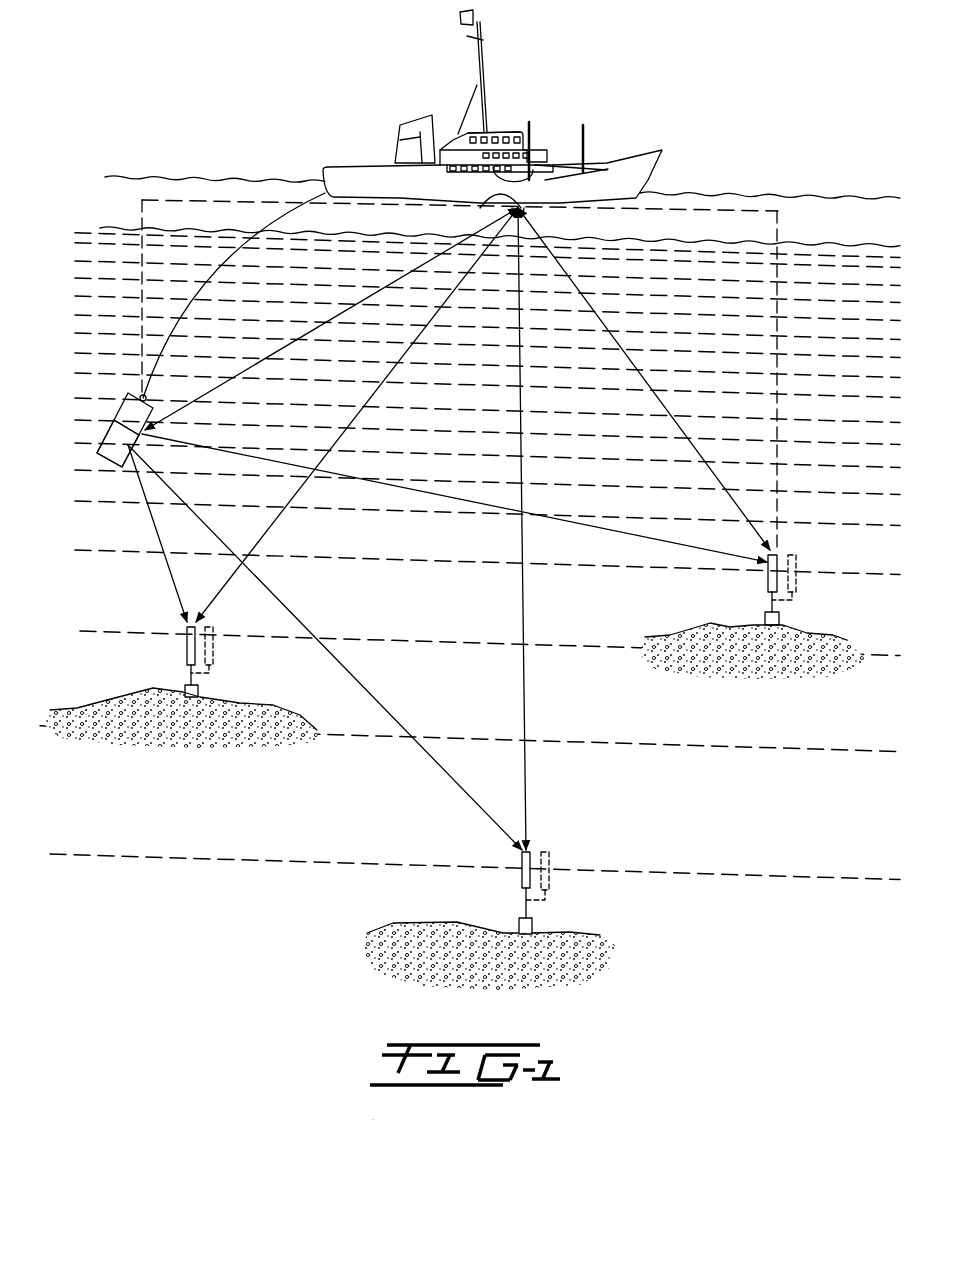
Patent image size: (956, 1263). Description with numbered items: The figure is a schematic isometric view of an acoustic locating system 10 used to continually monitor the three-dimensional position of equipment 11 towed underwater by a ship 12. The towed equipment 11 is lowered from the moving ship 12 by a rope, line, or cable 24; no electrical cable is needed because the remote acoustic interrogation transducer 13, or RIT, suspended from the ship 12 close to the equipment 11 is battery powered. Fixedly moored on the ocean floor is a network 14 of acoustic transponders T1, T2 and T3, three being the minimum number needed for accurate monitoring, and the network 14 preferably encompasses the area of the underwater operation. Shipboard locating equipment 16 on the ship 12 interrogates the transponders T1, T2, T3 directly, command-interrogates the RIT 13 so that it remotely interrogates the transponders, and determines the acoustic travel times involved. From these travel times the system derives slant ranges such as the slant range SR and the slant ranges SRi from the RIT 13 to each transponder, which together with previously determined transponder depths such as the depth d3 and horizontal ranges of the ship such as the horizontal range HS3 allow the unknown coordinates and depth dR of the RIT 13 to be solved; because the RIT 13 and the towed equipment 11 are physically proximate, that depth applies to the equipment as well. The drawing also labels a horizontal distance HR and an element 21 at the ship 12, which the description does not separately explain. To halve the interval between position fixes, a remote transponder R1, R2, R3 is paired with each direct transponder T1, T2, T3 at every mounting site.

The acoustic locating system 10 is at (643, 80).
The ship 12 is at (638, 163).
The shipboard locating equipment 16 is at (507, 128).
The hull-mounted transducer 21 is at (492, 202).
The cable 24 is at (171, 340).
The acoustic interrogation transducer 13 is at (131, 416).
The towed equipment 11 is at (118, 460).
The network of acoustic transponders 14 is at (140, 758).
The depth reference of receiver HR is at (250, 200).
The depth of the RIT dR is at (138, 256).
The horizontal range of the ship from transponder T3 HS3 is at (710, 210).
The depth of transponder T3 d3 is at (780, 406).
The slant range SR is at (247, 367).
The slant ranges from the RIT to the transponders SRi is at (160, 547).
The acoustic transponder T1 is at (186, 648).
The remote transponder R1 is at (216, 645).
The acoustic transponder T2 is at (521, 880).
The remote transponder R2 is at (552, 864).
The acoustic transponder T3 is at (767, 585).
The remote transponder R3 is at (800, 563).